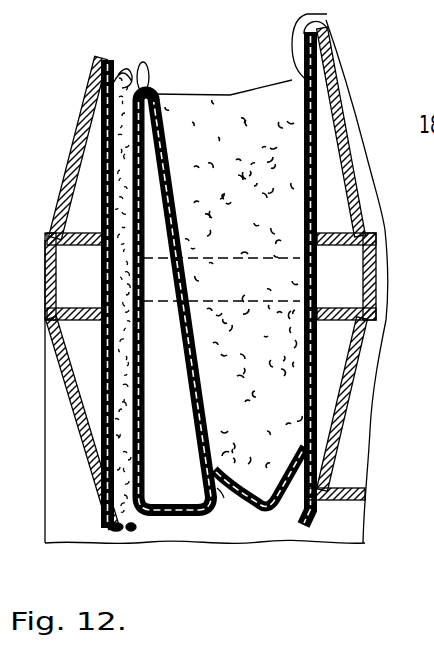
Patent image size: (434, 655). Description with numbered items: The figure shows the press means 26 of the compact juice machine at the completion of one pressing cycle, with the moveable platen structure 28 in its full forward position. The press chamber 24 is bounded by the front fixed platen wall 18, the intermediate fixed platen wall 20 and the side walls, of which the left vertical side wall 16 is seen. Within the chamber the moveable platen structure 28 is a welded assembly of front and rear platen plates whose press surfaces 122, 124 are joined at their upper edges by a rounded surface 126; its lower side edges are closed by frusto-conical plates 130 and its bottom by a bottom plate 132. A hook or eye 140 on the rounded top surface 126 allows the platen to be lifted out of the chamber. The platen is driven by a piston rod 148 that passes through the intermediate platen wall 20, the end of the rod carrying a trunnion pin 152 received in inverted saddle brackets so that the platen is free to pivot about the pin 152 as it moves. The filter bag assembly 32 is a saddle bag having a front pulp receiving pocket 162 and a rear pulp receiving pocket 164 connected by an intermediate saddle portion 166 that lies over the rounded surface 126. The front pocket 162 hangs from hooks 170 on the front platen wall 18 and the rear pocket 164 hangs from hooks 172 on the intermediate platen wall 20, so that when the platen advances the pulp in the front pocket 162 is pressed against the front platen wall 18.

The left vertical side wall 16 is at (350, 545).
The front fixed platen wall 18 is at (100, 168).
The intermediate fixed platen wall 20 is at (326, 101).
The press chamber 24 is at (224, 545).
The press means 26 is at (44, 446).
The moveable platen structure 28 is at (193, 518).
The filter bag assembly 32 is at (250, 85).
The front platen plate press surface 122 is at (220, 492).
The rear platen plate press surface 124 is at (138, 506).
The rounded upper surface 126 is at (150, 79).
The frusto-conical plate 130 is at (207, 420).
The bottom plate 132 is at (161, 593).
The hook or eye 140 is at (144, 61).
The piston rod 148 is at (378, 252).
The trunnion pin 152 is at (221, 279).
The front pulp receiving pocket 162 is at (230, 97).
The rear pulp receiving pocket 164 is at (100, 117).
The intermediate saddle portion 166 is at (160, 101).
The hooks on front platen wall 170 is at (116, 68).
The hooks on rear platen wall 172 is at (328, 40).